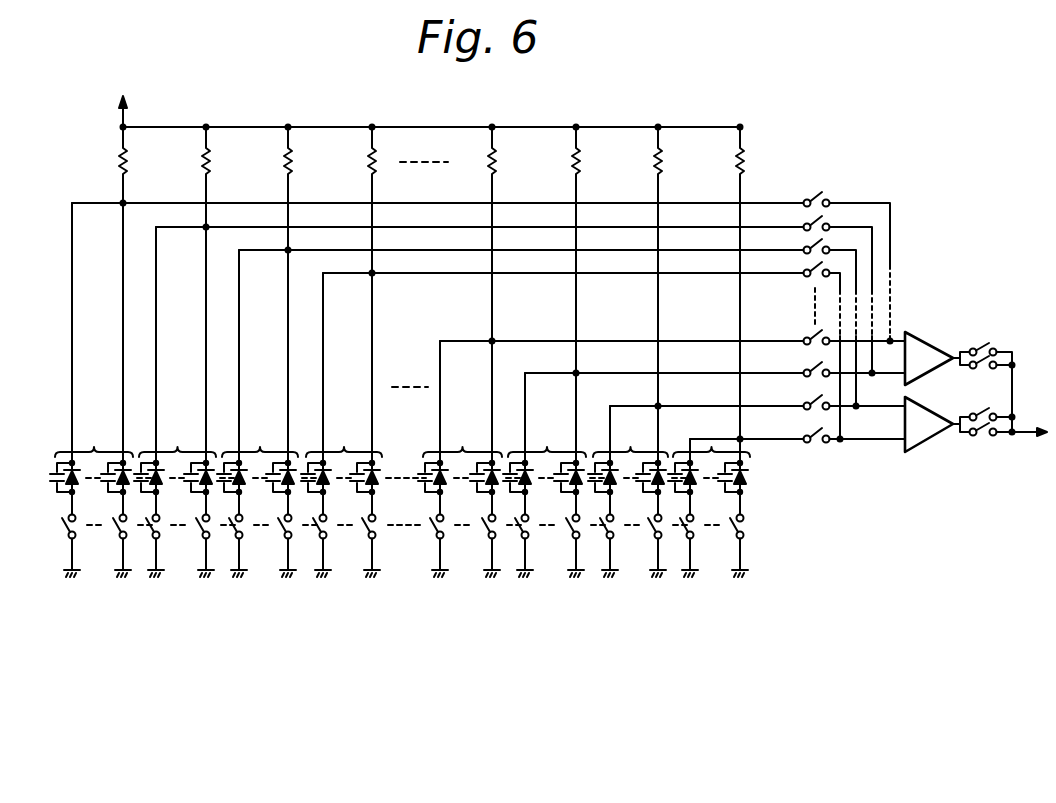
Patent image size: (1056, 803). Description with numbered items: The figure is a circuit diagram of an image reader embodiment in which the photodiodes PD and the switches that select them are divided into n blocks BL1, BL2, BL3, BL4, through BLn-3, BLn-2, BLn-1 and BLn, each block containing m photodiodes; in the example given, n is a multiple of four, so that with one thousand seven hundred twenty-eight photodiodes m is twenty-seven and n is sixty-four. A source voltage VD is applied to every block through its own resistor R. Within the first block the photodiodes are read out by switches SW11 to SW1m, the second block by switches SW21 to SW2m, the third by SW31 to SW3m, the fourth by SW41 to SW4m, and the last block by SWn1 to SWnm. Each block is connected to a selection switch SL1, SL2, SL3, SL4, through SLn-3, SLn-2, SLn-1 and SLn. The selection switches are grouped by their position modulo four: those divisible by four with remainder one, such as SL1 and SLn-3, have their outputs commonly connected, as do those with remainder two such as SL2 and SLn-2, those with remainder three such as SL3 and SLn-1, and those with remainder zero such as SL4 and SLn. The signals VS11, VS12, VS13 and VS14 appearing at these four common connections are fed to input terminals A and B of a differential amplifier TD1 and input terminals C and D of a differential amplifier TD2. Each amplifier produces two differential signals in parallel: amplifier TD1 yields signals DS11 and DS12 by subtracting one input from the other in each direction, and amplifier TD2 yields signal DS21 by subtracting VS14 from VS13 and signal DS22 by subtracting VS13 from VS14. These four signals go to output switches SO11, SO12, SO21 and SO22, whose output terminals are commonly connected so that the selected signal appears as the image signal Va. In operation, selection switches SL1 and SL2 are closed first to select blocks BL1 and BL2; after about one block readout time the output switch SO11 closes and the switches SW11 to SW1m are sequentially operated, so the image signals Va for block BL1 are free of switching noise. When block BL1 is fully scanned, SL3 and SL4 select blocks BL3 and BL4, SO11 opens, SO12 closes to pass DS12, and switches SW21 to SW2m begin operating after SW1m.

The source voltage VD is at (122, 101).
The resistor R is at (128, 159).
The selection switch SLn is at (482, 256).
The selection switch SLn-1 is at (803, 226).
The selection switch SLn-2 is at (803, 249).
The selection switch SLn-3 is at (803, 272).
The selection switch SL4 is at (803, 339).
The selection switch SL3 is at (803, 371).
The selection switch SL2 is at (803, 404).
The selection switch SL1 is at (803, 437).
The block BLn is at (94, 442).
The block BLn-1 is at (177, 443).
The block BLn-2 is at (260, 443).
The block BLn-3 is at (343, 448).
The block BL4 is at (462, 444).
The block BL3 is at (547, 444).
The block BL2 is at (630, 444).
The block BL1 is at (717, 450).
The photodiode PD is at (127, 490).
The switch SWnm is at (62, 538).
The switch SWn1 is at (111, 538).
The switch SW4m is at (430, 538).
The switch SW41 is at (480, 538).
The switch SW3m is at (515, 538).
The switch SW31 is at (564, 538).
The switch SW2m is at (600, 538).
The switch SW21 is at (646, 538).
The switch SW1m is at (680, 538).
The switch SW11 is at (728, 538).
The differential amplifier TD1 is at (919, 449).
The differential amplifier TD2 is at (919, 332).
The differential signal DS11 is at (966, 434).
The differential signal DS12 is at (966, 415).
The differential signal DS21 is at (963, 362).
The differential signal DS22 is at (972, 345).
The output switch SO11 is at (995, 437).
The output switch SO12 is at (1012, 416).
The output switch SO21 is at (1020, 348).
The output switch SO22 is at (991, 342).
The signal VS11 is at (896, 441).
The signal VS12 is at (898, 407).
The signal VS13 is at (881, 338).
The signal VS14 is at (904, 335).
The image signal Va is at (1027, 434).